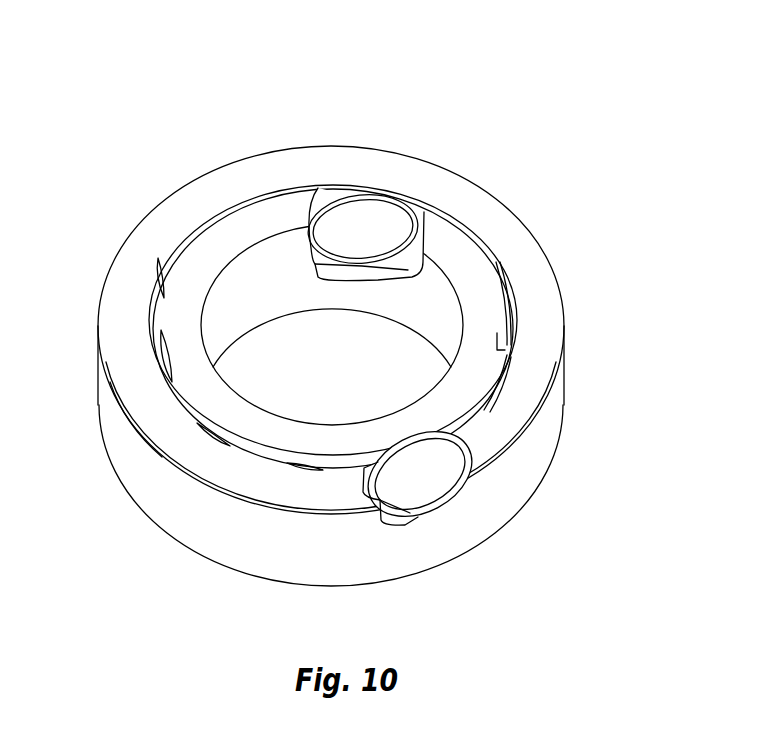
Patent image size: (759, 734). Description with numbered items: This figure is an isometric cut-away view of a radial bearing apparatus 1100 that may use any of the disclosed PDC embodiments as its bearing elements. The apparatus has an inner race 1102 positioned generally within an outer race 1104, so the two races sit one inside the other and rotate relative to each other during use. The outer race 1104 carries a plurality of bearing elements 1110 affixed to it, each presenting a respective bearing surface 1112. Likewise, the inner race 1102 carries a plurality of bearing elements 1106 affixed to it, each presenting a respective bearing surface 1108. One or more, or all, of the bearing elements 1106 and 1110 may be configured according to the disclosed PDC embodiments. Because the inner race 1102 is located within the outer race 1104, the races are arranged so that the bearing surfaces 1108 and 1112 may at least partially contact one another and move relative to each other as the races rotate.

The radial bearing apparatus 1100 is at (329, 337).
The inner race 1102 is at (282, 210).
The outer race 1104 is at (117, 505).
The bearing elements 1106 is at (475, 523).
The bearing surfaces 1108 is at (433, 473).
The bearing elements 1110 is at (410, 189).
The bearing surfaces 1112 is at (369, 223).